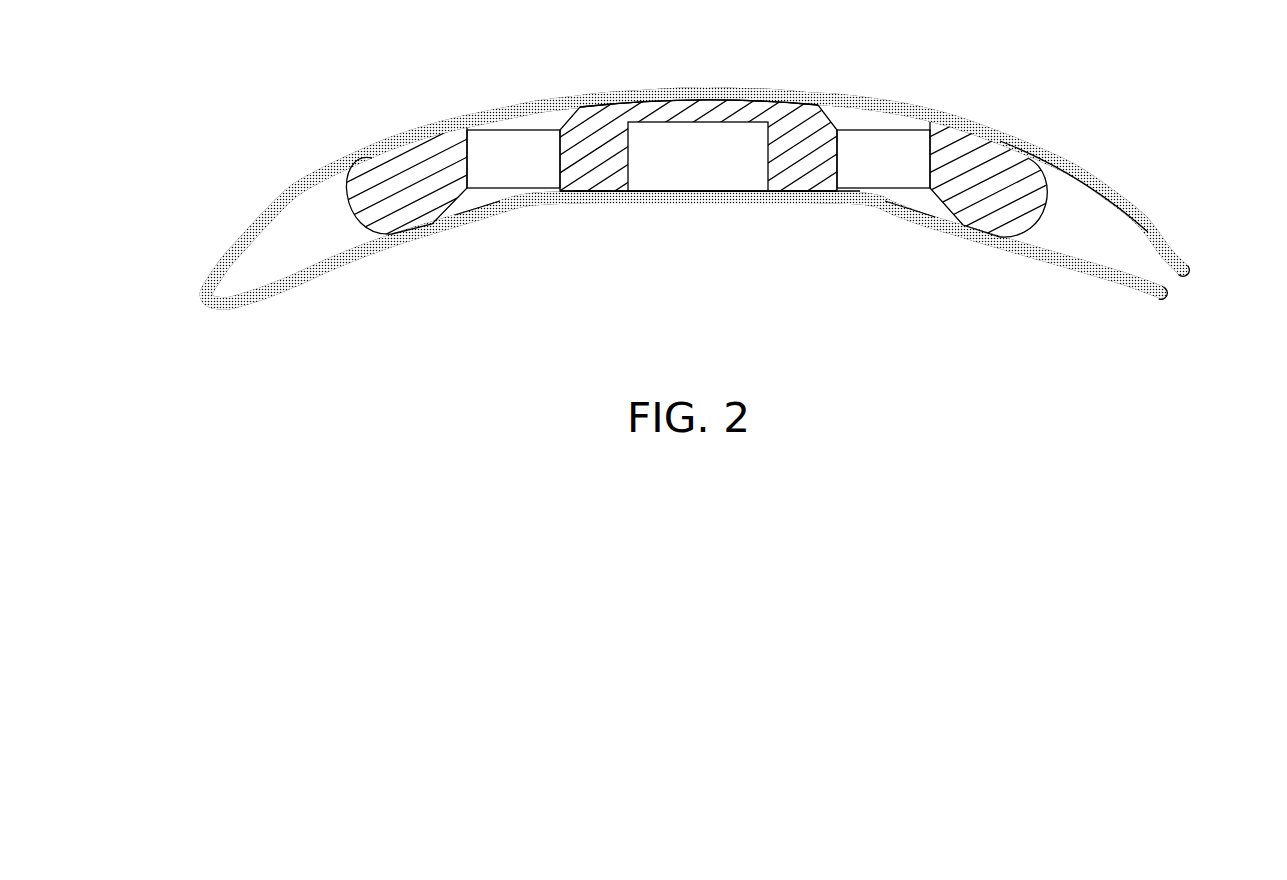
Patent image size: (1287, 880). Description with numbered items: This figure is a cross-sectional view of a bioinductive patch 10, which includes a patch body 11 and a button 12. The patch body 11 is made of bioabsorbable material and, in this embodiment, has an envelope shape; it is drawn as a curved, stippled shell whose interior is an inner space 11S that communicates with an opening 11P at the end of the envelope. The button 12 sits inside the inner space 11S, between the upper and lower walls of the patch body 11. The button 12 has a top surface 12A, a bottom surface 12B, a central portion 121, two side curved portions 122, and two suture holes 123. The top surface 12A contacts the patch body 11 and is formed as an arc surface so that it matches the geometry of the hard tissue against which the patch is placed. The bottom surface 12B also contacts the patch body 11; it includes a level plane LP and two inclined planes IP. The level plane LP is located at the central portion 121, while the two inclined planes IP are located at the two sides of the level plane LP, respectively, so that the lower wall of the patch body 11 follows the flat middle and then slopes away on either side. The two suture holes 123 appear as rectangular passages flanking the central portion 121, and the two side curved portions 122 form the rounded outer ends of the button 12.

The bioinductive patch 10 is at (738, 186).
The patch body 11 is at (1017, 137).
The inner space 11S is at (1087, 225).
The opening 11P is at (1174, 288).
The button 12 is at (715, 186).
The top surface 12A is at (745, 96).
The bottom surface 12B is at (792, 203).
The central portion 121 is at (677, 115).
The side curved portions 122 is at (446, 157).
The suture holes 123 is at (518, 143).
The inclined planes IP is at (480, 218).
The level plane LP is at (608, 203).